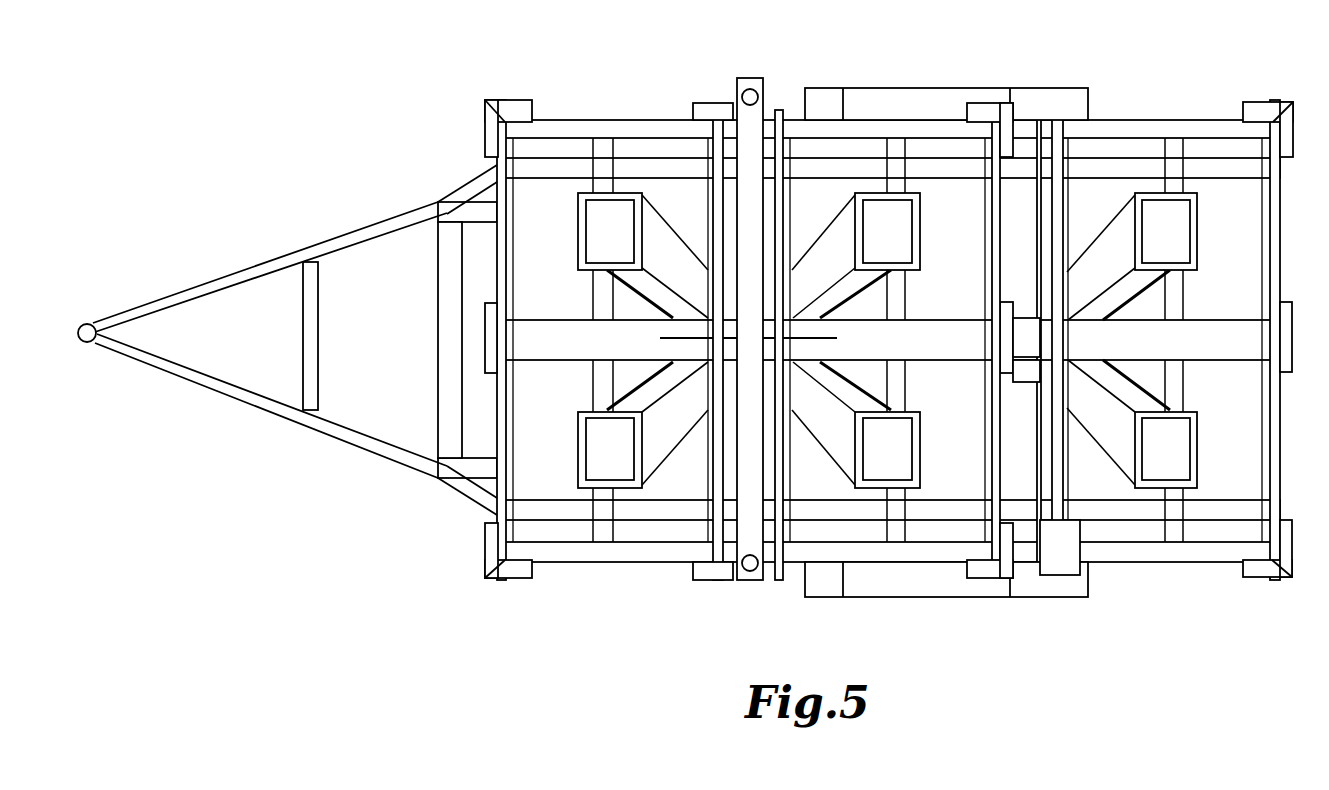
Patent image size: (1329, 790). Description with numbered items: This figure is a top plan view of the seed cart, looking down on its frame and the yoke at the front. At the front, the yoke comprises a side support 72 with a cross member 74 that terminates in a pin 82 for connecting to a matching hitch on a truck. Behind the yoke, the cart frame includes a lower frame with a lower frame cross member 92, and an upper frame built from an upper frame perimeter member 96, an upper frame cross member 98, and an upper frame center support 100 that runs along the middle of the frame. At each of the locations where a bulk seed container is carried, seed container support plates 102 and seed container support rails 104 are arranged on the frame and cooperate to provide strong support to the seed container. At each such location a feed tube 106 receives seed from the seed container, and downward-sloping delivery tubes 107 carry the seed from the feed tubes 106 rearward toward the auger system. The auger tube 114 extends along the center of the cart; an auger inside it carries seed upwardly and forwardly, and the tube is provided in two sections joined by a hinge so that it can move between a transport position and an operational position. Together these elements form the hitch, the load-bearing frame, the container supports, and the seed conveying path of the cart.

The side support 72 is at (240, 397).
The cross member 74 is at (318, 342).
The pin 82 is at (91, 324).
The lower frame cross member 92 is at (239, 262).
The upper frame perimeter member 96 is at (1282, 262).
The upper frame cross member 98 is at (1040, 303).
The upper frame center support 100 is at (932, 318).
The seed container support plates 102 is at (500, 100).
The seed container support rails 104 is at (575, 118).
The feed tube 106 is at (578, 248).
The delivery tubes 107 is at (688, 242).
The auger tube 114 is at (760, 115).